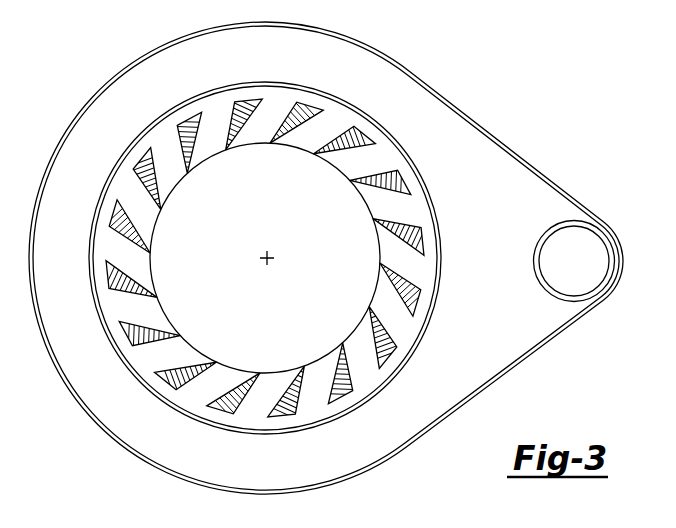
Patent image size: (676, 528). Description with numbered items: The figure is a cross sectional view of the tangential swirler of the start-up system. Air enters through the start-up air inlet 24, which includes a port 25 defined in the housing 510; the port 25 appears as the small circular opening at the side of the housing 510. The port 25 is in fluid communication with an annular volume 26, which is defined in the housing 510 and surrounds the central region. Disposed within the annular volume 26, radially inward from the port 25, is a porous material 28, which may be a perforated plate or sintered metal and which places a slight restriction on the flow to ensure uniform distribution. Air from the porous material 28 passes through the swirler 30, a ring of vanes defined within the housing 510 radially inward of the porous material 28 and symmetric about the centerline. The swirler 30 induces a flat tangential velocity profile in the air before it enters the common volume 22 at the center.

The start-up air inlet 24 is at (546, 98).
The annular volume 26 is at (375, 51).
The housing 510 is at (98, 427).
The port 25 is at (553, 247).
The porous material 28 is at (409, 154).
The common volume 22 is at (277, 324).
The swirler 30 is at (352, 160).